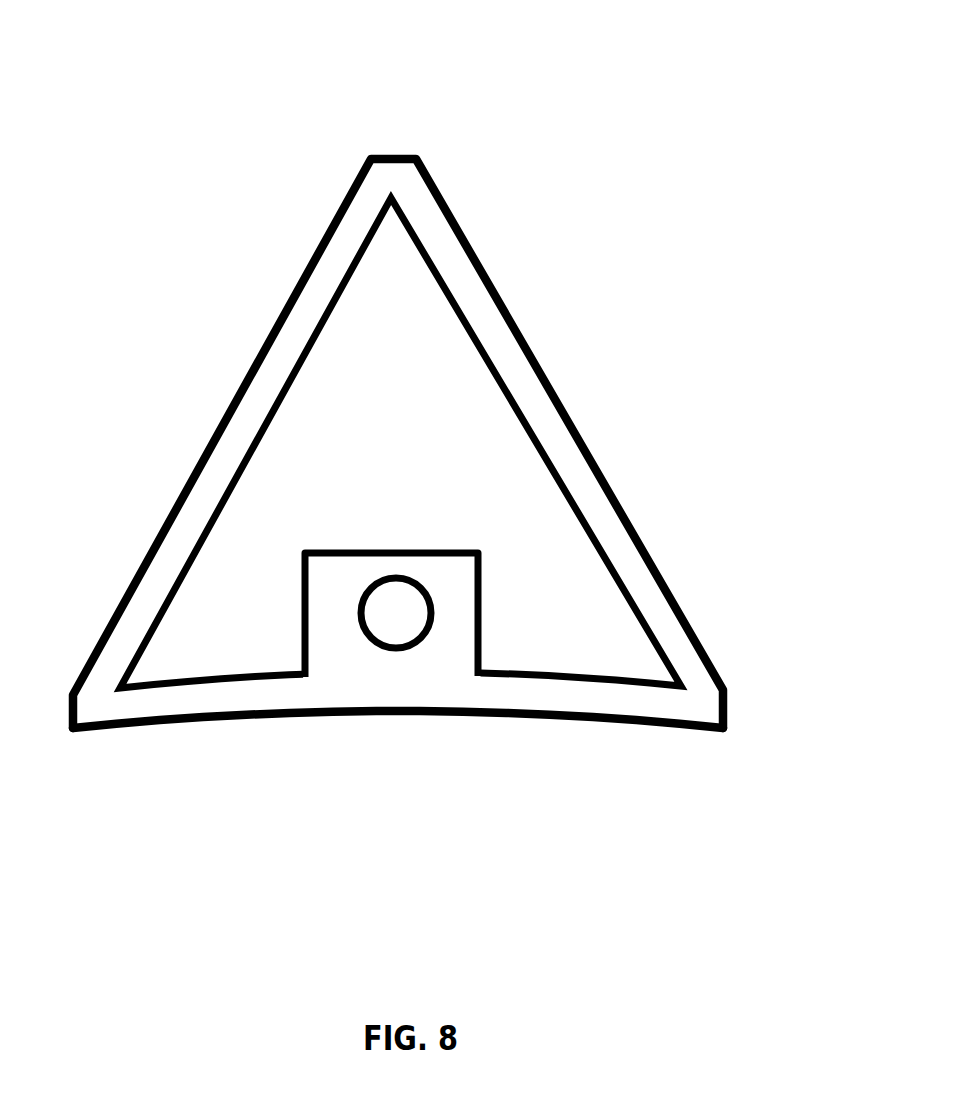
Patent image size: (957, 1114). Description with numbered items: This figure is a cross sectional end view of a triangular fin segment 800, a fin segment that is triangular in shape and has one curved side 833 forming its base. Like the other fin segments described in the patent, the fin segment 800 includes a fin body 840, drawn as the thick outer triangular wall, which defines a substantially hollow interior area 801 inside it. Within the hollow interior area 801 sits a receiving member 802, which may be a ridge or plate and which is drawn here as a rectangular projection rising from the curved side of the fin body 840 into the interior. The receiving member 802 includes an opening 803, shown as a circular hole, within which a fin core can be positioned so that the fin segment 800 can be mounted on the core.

The triangular fin segment 800 is at (723, 90).
The fin body 840 is at (498, 287).
The hollow interior area 801 is at (480, 428).
The receiving member 802 is at (458, 642).
The opening 803 is at (398, 628).
The curved side 833 is at (359, 717).